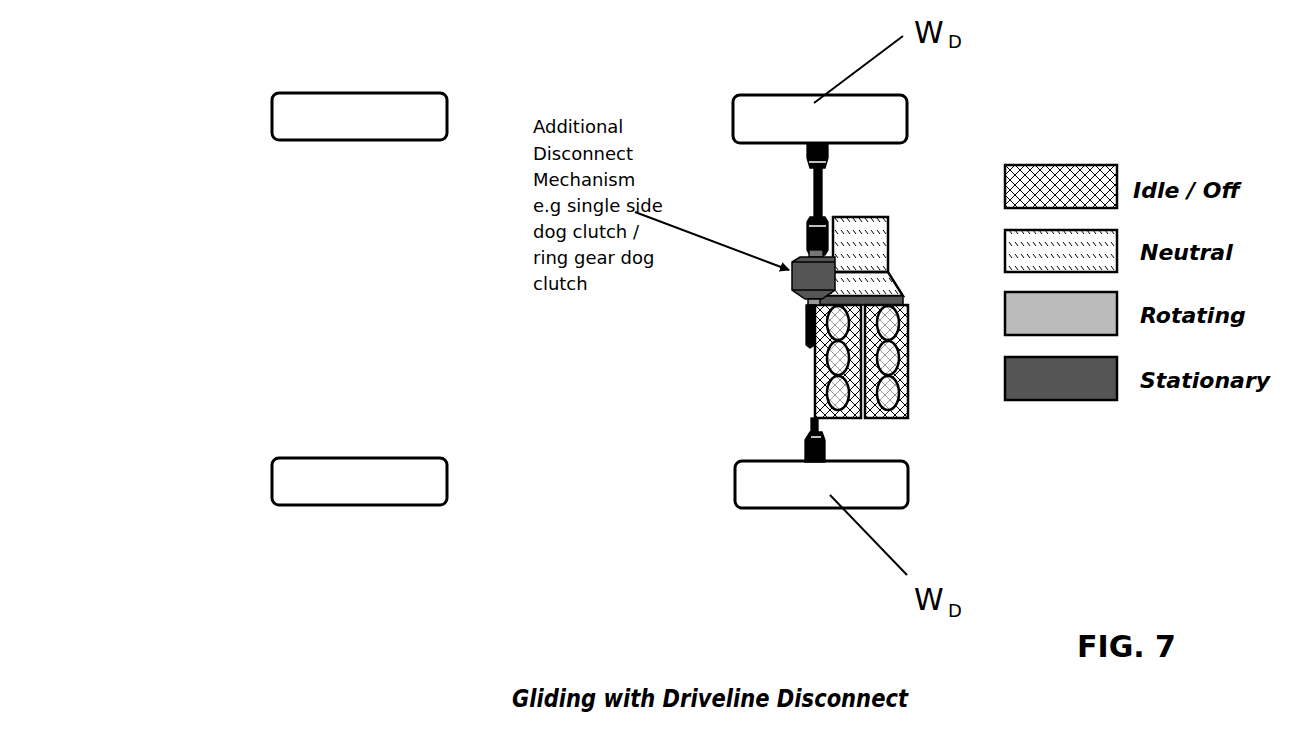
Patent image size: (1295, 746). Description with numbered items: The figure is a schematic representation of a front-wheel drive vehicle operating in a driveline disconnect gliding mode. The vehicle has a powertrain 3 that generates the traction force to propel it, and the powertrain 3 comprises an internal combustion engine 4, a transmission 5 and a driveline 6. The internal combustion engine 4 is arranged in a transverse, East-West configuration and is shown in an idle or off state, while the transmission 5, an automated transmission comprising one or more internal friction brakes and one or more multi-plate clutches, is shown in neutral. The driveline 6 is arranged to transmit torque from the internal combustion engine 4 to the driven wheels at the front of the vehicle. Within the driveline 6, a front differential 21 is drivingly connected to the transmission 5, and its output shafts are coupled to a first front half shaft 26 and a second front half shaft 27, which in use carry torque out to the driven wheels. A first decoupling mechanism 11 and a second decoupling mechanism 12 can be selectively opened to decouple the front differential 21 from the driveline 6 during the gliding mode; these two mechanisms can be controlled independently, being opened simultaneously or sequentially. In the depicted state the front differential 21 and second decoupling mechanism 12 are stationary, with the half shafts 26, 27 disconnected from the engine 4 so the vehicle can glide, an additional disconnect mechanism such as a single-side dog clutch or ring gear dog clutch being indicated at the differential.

The powertrain 3 is at (685, 122).
The second front half shaft 27 is at (813, 180).
The first decoupling mechanism 11 is at (845, 227).
The transmission 5 is at (884, 237).
The internal combustion engine 4 is at (905, 377).
The driveline 6 is at (718, 346).
The second decoupling mechanism 12 is at (795, 283).
The front differential 21 is at (808, 297).
The first front half shaft 26 is at (813, 393).